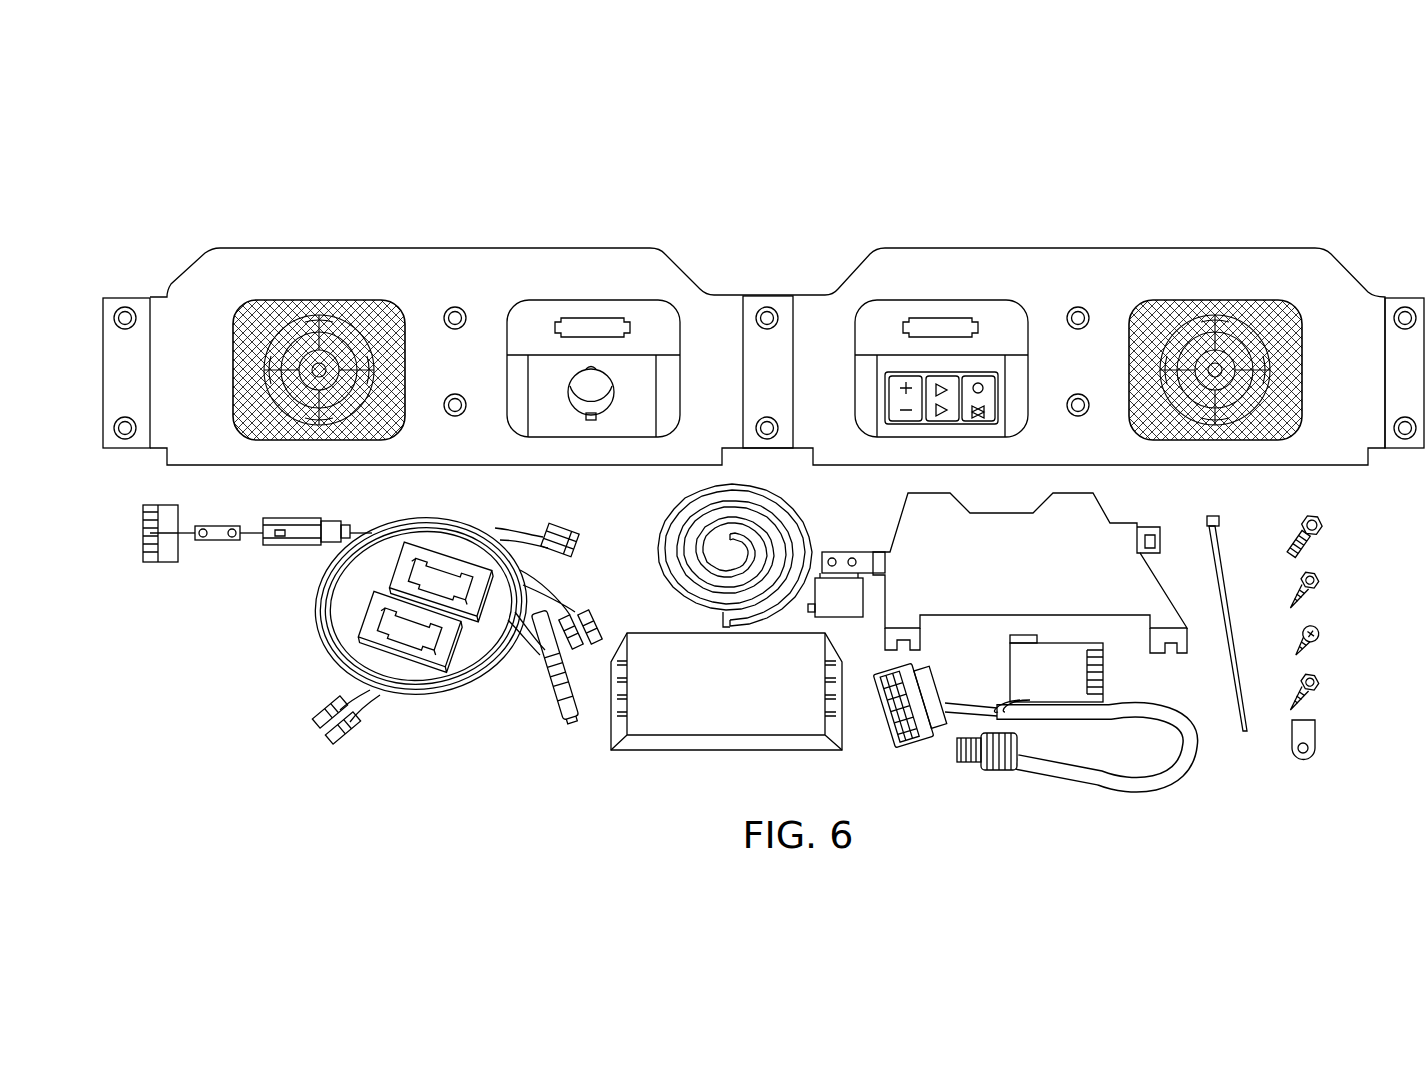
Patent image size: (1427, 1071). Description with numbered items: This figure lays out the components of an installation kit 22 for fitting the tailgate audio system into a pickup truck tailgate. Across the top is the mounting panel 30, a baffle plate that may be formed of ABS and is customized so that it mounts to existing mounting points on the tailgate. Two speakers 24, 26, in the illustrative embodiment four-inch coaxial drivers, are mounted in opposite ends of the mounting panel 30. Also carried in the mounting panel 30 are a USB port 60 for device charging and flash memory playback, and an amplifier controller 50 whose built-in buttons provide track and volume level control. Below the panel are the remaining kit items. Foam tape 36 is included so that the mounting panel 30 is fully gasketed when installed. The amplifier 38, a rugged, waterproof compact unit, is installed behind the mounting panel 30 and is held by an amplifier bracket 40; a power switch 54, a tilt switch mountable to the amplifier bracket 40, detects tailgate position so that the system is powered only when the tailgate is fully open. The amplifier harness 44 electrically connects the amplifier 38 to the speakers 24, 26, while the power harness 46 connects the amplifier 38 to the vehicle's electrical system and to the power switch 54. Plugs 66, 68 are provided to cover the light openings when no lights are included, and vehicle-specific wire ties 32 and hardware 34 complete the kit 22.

The kit 22 is at (1100, 218).
The mounting panel 30 is at (1288, 240).
The speaker 24 is at (367, 312).
The speaker 26 is at (1253, 312).
The USB port 60 is at (583, 403).
The amplifier controller 50 is at (970, 427).
The foam tape 36 is at (658, 522).
The amplifier 38 is at (648, 733).
The power switch 54 is at (828, 593).
The amplifier bracket 40 is at (1122, 527).
The power harness 46 is at (1047, 765).
The wire ties 32 is at (1218, 522).
The hardware 34 is at (1318, 510).
The amplifier harness 44 is at (430, 693).
The plug 66 is at (423, 548).
The plug 68 is at (365, 626).